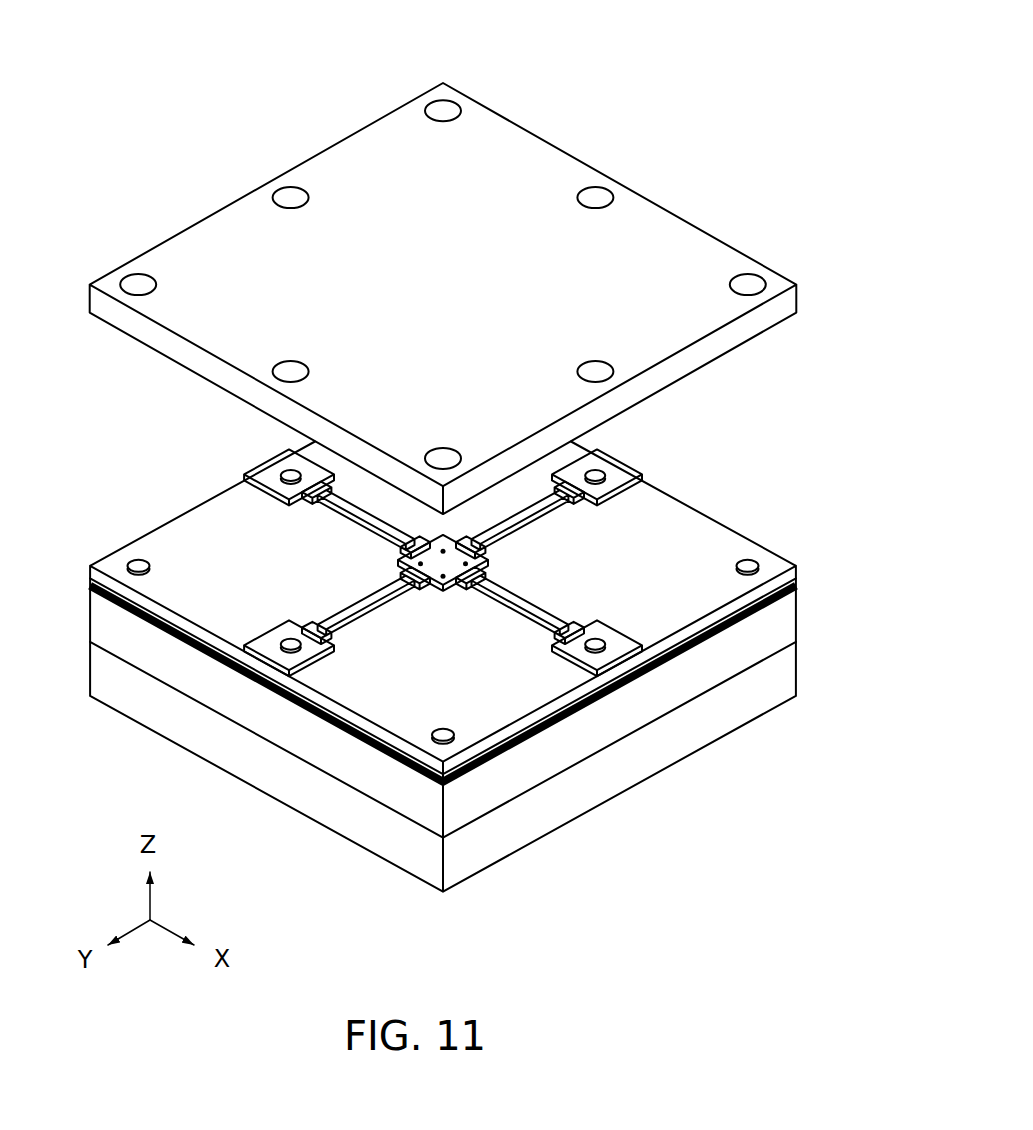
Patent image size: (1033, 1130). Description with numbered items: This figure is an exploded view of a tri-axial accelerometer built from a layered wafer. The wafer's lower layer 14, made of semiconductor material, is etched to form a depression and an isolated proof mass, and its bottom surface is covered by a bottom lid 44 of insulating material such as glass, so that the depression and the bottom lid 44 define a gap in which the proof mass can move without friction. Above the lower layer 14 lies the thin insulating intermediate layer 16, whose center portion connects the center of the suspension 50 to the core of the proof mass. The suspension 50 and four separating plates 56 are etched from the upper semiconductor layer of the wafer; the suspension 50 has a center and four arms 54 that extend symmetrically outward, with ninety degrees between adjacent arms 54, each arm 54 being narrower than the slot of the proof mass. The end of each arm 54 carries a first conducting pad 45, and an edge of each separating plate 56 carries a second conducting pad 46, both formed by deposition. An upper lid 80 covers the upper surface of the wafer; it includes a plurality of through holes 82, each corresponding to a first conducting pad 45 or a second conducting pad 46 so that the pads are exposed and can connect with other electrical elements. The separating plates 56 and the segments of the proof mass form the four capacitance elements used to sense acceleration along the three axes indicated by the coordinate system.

The lower layer 14 is at (557, 741).
The intermediate layer 16 is at (515, 751).
The bottom lid 44 is at (490, 834).
The first conducting pad 45 is at (286, 466).
The second conducting pad 46 is at (138, 556).
The suspension 50 is at (437, 572).
The arm 54 is at (463, 625).
The separating plate 56 is at (664, 540).
The upper lid 80 is at (443, 265).
The through hole 82 is at (442, 100).